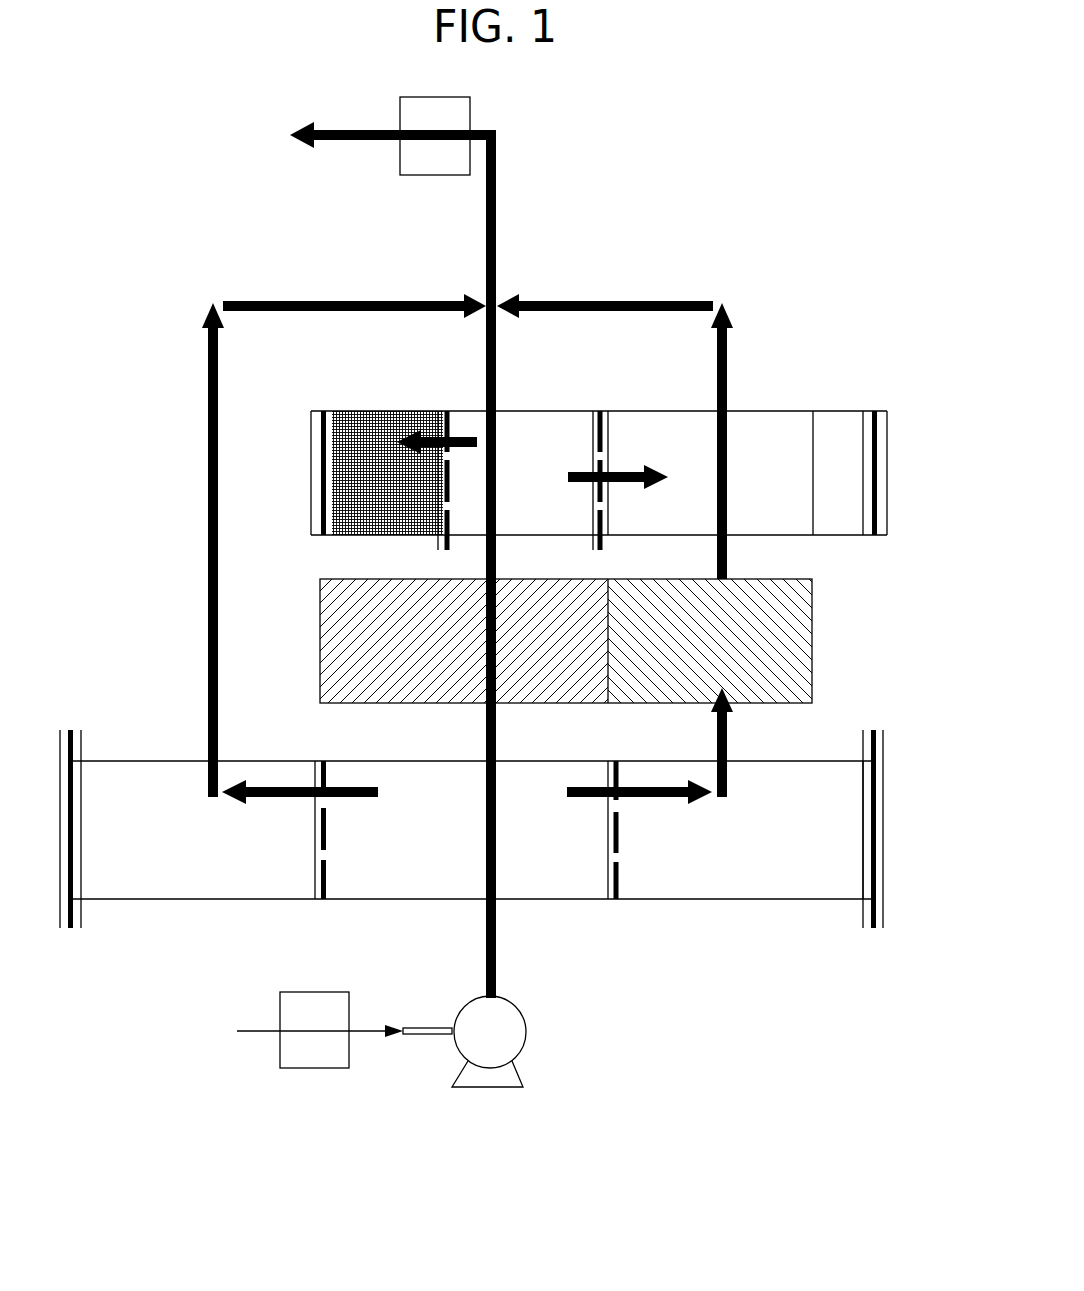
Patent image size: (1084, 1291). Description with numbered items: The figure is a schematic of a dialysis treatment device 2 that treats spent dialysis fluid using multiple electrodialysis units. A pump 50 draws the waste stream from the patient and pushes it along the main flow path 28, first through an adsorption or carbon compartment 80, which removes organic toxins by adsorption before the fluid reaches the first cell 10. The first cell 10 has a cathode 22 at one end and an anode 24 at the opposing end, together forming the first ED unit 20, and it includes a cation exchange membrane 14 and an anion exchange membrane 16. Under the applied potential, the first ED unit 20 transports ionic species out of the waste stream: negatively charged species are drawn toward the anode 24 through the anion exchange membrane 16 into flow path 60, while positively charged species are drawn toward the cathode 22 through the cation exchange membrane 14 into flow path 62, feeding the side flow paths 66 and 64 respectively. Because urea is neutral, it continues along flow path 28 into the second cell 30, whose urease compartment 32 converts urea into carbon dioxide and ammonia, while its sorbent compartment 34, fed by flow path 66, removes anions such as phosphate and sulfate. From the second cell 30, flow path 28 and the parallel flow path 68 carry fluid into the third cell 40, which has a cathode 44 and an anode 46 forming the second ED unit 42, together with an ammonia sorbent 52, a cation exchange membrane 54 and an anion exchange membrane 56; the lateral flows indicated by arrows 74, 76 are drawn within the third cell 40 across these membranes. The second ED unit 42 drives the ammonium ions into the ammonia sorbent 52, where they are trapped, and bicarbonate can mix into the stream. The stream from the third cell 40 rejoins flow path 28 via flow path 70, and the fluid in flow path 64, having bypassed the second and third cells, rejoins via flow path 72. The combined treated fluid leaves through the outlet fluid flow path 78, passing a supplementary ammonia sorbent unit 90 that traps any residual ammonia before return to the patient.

The dialysis treatment device 2 is at (790, 178).
The first cell 10 is at (502, 850).
The cation exchange membrane 14 is at (325, 885).
The anion exchange membrane 16 is at (607, 880).
The first electrodialysis unit 20 is at (889, 805).
The cathode 22 is at (72, 883).
The anode 24 is at (865, 878).
The flow path 28 is at (497, 730).
The second cell 30 is at (564, 670).
The urease compartment 32 is at (378, 688).
The sorbent compartment 34 is at (775, 685).
The third cell 40 is at (596, 473).
The second electrodialysis unit 42 is at (892, 460).
The cathode 44 is at (316, 438).
The anode 46 is at (871, 507).
The pump 50 is at (502, 1022).
The ammonia sorbent 52 is at (370, 435).
The cation exchange membrane 54 is at (440, 515).
The anion exchange membrane 56 is at (595, 540).
The flow path 60 is at (650, 800).
The flow path 62 is at (360, 790).
The flow path 64 is at (208, 738).
The flow path 66 is at (717, 752).
The flow path 68 is at (717, 548).
The flow path 70 is at (627, 306).
The flow path 72 is at (330, 306).
The filter inlet flow 74 is at (467, 436).
The filter outlet flow 76 is at (626, 470).
The outlet fluid flow path 78 is at (497, 205).
The adsorption or carbon compartment 80 is at (310, 1050).
The supplementary ammonia sorbent unit 90 is at (452, 113).